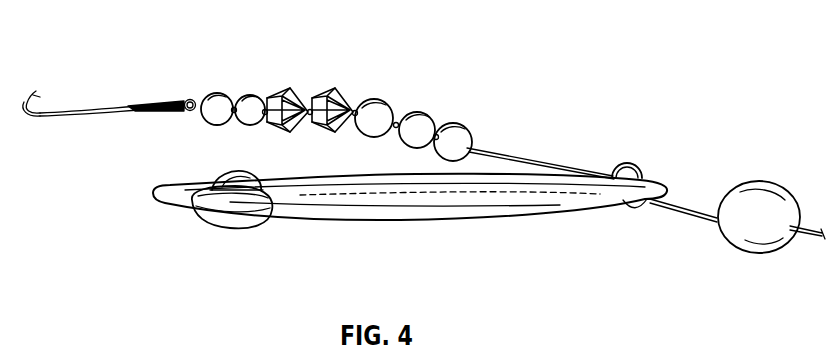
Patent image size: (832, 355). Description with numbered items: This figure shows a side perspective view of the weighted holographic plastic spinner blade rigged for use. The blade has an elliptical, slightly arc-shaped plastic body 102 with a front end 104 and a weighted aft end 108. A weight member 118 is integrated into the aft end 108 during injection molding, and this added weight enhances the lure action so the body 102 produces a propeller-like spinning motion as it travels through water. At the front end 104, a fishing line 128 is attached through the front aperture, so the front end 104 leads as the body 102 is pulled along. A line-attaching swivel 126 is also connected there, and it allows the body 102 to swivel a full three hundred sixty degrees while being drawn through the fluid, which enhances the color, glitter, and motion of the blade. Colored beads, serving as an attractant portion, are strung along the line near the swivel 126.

The body 102 is at (495, 222).
The front end 104 is at (650, 177).
The weighted aft end 108 is at (160, 204).
The weight member 118 is at (236, 172).
The line-attaching swivel 126 is at (170, 97).
The fishing line 128 is at (508, 158).